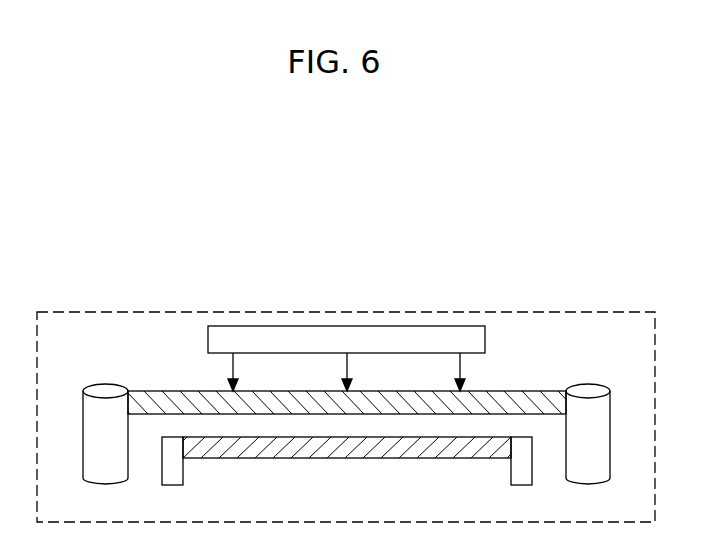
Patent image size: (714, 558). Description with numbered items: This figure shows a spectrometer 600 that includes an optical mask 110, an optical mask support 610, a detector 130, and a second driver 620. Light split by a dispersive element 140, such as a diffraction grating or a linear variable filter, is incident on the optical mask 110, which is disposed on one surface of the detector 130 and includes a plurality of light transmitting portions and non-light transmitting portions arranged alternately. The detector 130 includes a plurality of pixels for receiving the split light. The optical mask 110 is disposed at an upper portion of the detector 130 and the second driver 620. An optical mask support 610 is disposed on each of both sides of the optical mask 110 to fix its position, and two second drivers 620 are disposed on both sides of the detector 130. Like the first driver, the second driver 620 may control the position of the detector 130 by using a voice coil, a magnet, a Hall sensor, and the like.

The spectrometer 600 is at (418, 312).
The dispersive element 140 is at (487, 337).
The optical mask 110 is at (395, 391).
The detector 130 is at (393, 458).
The optical mask support 610 is at (100, 485).
The second driver 620 is at (167, 486).